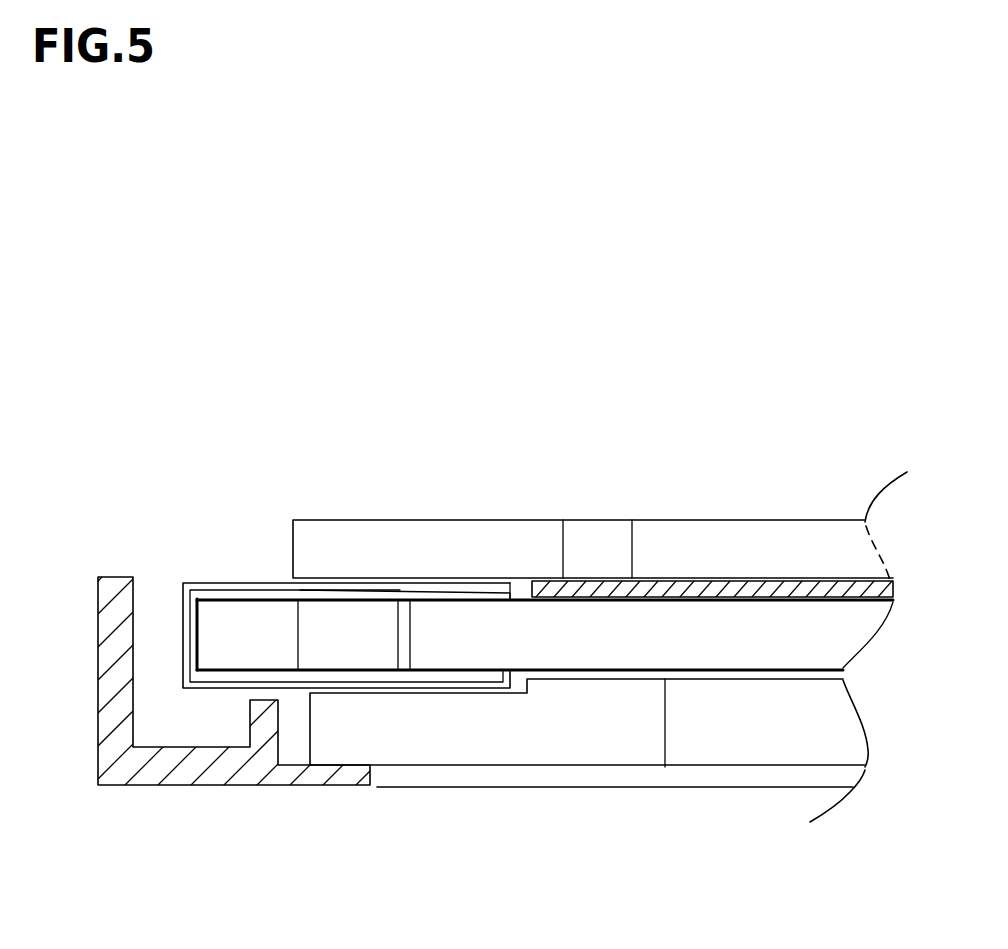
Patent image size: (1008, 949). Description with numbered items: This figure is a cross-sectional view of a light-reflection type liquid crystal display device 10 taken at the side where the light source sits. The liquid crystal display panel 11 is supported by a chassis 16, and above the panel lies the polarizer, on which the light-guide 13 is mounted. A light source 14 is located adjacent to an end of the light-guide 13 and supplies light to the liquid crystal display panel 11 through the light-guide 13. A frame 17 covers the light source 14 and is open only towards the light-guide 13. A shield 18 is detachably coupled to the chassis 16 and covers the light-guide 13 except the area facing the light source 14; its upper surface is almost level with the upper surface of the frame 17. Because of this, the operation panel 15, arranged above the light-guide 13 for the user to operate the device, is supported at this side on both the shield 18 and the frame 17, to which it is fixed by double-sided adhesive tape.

The light-reflection type liquid crystal display device 10 is at (242, 317).
The liquid crystal display panel 11 is at (500, 727).
The light-guide 13 is at (745, 635).
The light source 14 is at (258, 623).
The operation panel 15 is at (598, 558).
The chassis 16 is at (183, 787).
The frame 17 is at (357, 580).
The shield 18 is at (812, 592).